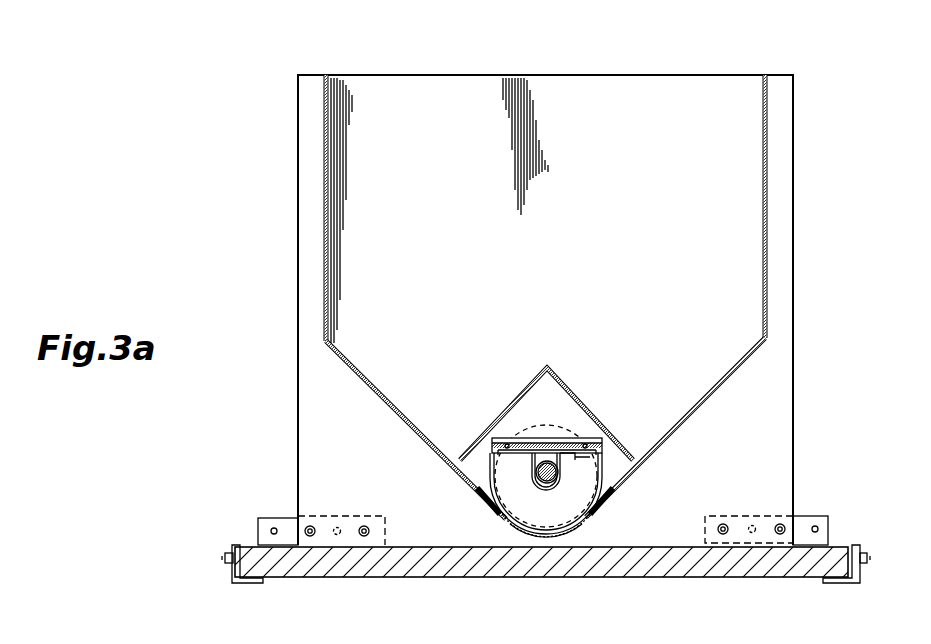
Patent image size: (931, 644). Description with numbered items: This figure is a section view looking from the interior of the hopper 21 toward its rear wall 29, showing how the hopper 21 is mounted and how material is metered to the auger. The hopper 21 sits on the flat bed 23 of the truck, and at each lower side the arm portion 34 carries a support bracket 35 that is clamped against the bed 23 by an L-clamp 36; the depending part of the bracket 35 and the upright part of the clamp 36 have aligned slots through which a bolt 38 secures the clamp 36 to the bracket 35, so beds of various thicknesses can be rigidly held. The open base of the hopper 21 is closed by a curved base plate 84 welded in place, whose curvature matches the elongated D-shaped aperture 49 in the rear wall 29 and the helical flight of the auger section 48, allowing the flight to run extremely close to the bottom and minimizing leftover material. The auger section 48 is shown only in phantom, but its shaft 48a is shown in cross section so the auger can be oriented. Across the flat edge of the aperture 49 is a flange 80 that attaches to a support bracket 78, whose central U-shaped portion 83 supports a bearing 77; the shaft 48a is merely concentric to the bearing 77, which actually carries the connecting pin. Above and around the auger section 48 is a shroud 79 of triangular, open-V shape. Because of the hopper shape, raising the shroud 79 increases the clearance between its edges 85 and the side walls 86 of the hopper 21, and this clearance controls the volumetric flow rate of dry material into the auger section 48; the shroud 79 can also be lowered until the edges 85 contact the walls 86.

The rear wall 29 is at (672, 85).
The hopper 21 is at (327, 135).
The arm portion 34 is at (298, 174).
The side walls 86 is at (380, 400).
The edges 85 is at (485, 463).
The shroud 79 is at (597, 417).
The bearing 77 is at (555, 457).
The flange 80 is at (512, 442).
The auger section 48 is at (537, 425).
The shaft 48a is at (513, 503).
The aperture 49 is at (533, 478).
The U-shaped portion 83 is at (547, 488).
The base plate 84 is at (513, 522).
The support bracket 78 is at (573, 460).
The support bracket 35 is at (250, 540).
The L-clamp 36 is at (233, 583).
The bolt 38 is at (227, 557).
The bed 23 is at (367, 567).